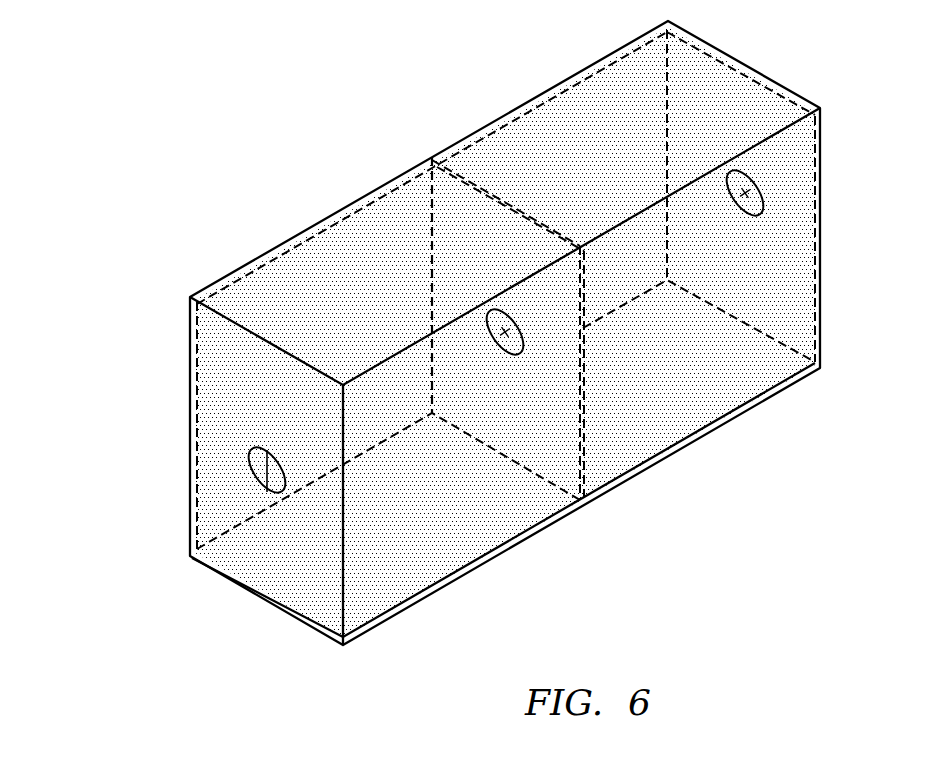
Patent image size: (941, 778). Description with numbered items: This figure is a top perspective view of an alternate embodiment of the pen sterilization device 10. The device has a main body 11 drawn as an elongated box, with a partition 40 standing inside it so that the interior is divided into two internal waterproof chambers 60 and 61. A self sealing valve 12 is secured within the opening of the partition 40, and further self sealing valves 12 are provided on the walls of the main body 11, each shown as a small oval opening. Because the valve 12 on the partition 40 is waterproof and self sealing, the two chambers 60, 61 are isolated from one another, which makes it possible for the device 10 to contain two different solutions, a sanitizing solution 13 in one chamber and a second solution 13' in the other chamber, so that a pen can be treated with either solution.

The pen sterilization device 10 is at (238, 115).
The main body 11 is at (200, 282).
The self sealing valve 12 is at (283, 483).
The sanitizing solution 13 is at (503, 507).
The sanitizing solution 13' is at (720, 357).
The partition 40 is at (448, 153).
The internal waterproof chamber 60 is at (383, 228).
The internal waterproof chamber 61 is at (643, 68).